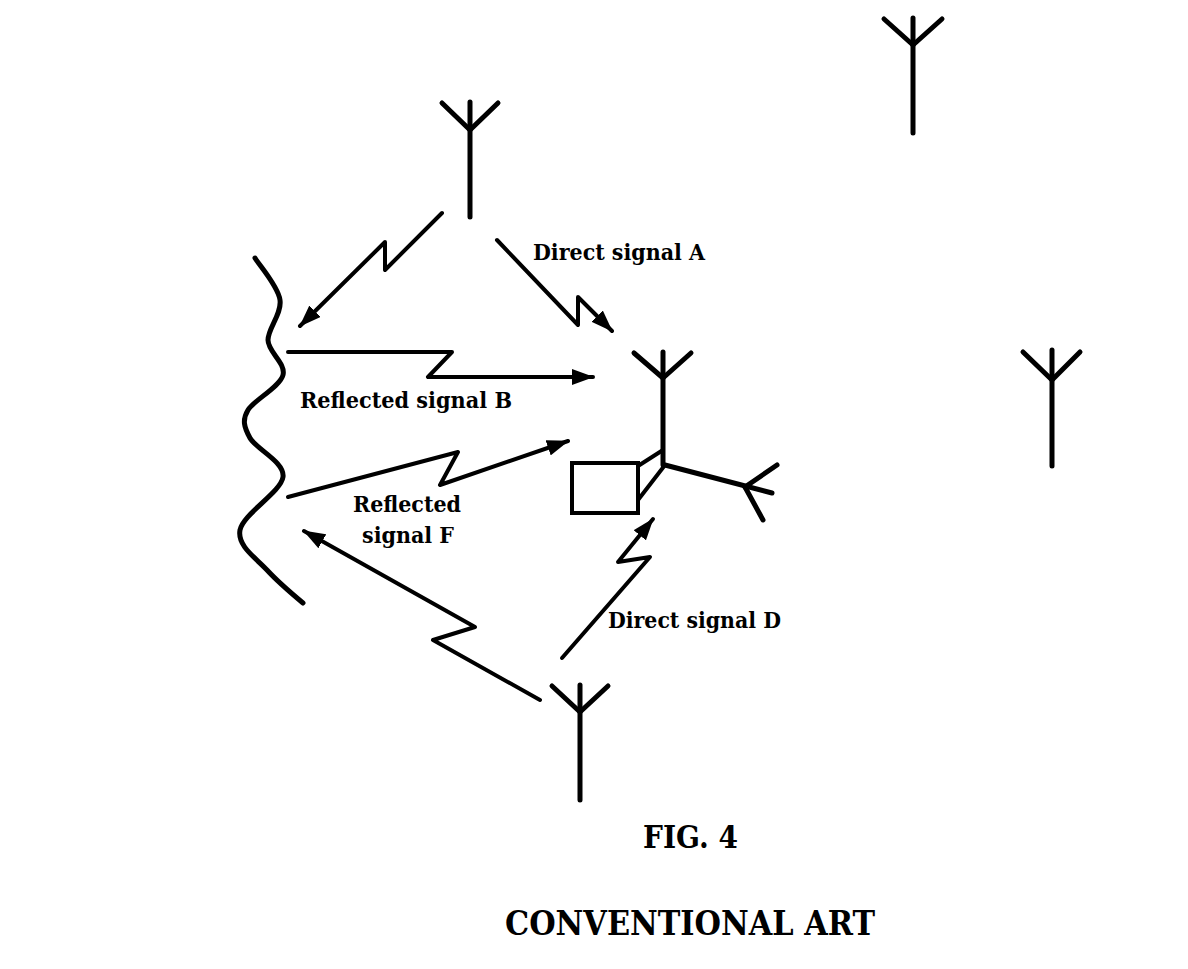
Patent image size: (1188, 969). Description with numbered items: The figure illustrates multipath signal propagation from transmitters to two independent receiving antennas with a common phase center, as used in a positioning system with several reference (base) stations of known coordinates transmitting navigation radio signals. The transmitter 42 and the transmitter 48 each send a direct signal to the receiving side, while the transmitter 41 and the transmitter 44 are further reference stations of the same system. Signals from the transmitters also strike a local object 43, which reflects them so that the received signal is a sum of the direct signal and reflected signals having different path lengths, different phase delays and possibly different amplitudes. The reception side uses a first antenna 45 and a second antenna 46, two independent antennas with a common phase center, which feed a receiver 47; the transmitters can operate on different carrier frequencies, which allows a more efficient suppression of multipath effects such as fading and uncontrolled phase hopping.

The second transmitter Tx 2 41 is at (912, 70).
The first transmitter Tx 1 42 is at (470, 155).
The reflector 43 is at (268, 330).
The N-th transmitter Tx N 44 is at (1052, 448).
The first antenna 45 is at (665, 437).
The second antenna 46 is at (717, 477).
The receiver Rx 47 is at (572, 512).
The third transmitter Tx 3 48 is at (578, 767).